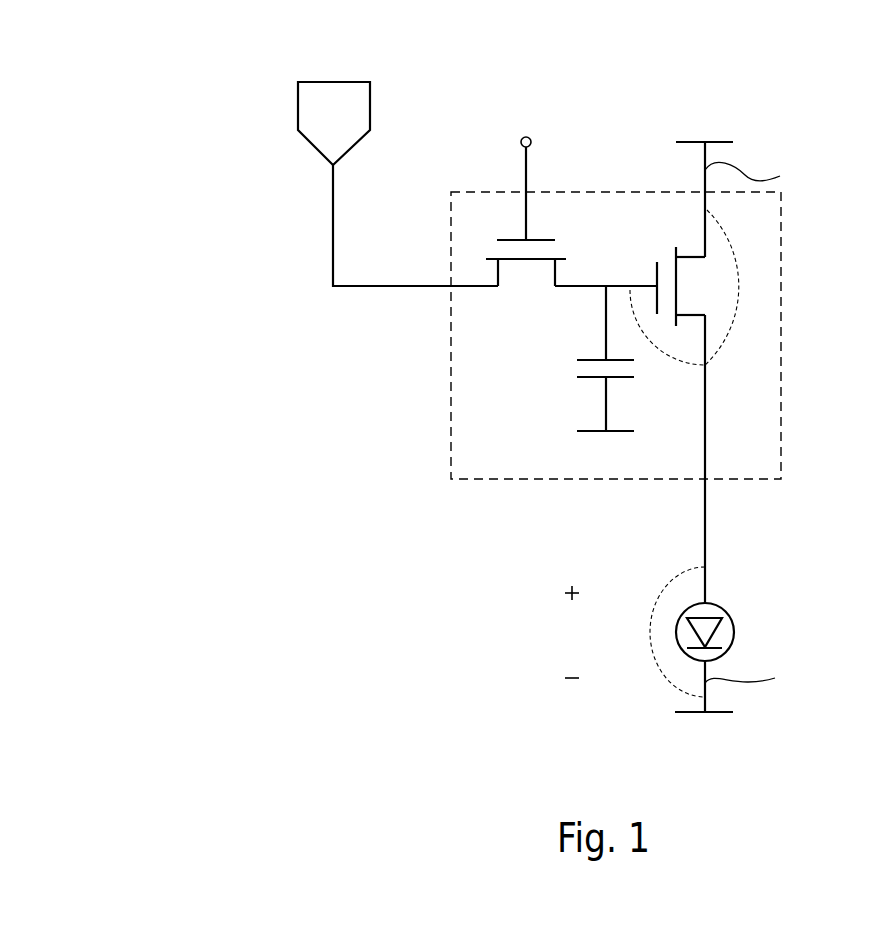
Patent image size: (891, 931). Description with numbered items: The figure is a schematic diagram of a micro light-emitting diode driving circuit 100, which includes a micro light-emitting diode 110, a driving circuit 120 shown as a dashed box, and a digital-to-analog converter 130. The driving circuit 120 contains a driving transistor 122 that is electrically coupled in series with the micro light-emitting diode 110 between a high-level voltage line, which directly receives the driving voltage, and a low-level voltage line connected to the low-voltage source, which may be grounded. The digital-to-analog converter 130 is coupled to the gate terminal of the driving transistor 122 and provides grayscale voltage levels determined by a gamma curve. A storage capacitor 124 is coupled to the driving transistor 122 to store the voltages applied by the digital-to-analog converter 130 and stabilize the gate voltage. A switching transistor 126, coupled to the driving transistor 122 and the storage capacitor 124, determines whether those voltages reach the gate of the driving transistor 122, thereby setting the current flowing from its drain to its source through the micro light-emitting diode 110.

The micro light-emitting diode driving circuit 100 is at (170, 36).
The micro light-emitting diode 110 is at (734, 632).
The driving circuit 120 is at (460, 190).
The driving transistor 122 is at (640, 265).
The storage capacitor 124 is at (563, 348).
The switching transistor 126 is at (478, 240).
The digital-to-analog converter 130 is at (298, 88).